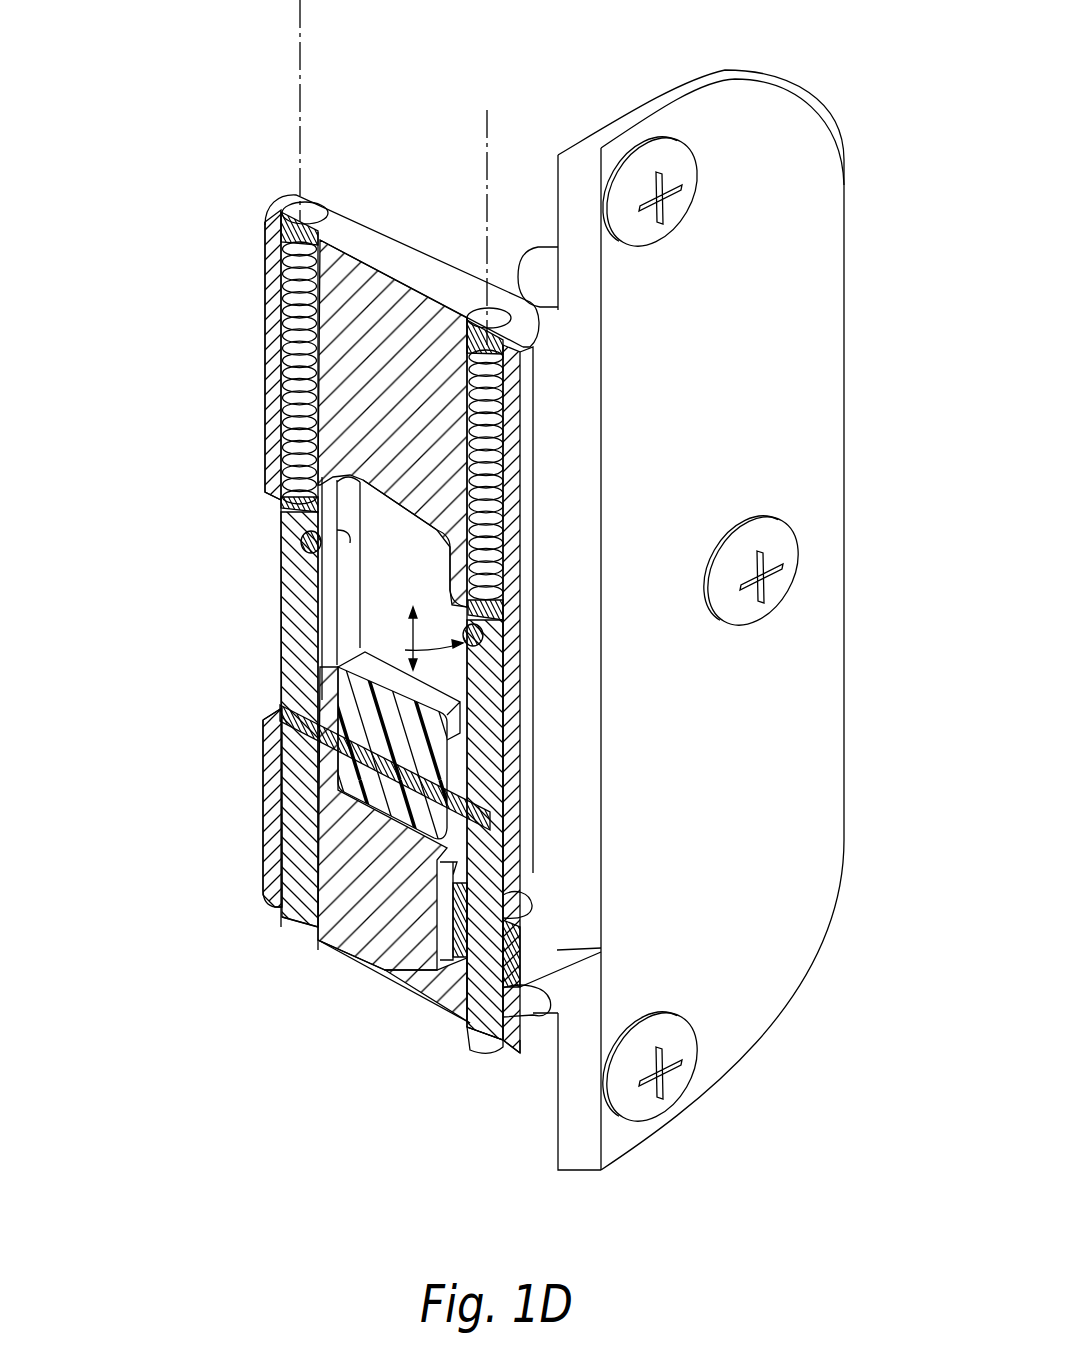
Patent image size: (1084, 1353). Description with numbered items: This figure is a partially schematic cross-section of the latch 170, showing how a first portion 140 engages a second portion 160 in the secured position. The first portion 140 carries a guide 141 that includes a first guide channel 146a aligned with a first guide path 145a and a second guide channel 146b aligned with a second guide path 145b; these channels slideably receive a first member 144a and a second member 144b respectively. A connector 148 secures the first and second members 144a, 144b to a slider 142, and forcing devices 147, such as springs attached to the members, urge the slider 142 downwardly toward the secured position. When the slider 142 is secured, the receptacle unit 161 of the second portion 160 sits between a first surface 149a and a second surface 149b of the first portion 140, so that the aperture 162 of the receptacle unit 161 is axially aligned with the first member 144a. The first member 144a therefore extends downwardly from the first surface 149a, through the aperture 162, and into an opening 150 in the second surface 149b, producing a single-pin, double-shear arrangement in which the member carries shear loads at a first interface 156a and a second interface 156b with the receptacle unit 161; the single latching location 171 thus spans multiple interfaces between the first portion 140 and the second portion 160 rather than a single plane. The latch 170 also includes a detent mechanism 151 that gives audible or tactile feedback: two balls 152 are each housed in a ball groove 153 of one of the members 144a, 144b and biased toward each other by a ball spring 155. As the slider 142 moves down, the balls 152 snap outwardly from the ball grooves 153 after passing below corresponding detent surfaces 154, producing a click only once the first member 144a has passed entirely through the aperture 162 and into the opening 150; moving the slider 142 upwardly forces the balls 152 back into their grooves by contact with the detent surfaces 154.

The first portion 140 is at (393, 252).
The guide 141 is at (243, 386).
The slider 142 is at (355, 700).
The first member 144a is at (503, 782).
The second member 144b is at (282, 667).
The first guide path 145a is at (488, 125).
The second guide path 145b is at (298, 50).
The first guide channel 146a is at (507, 530).
The second guide channel 146b is at (300, 415).
The forcing devices 147 is at (295, 268).
The connector 148 is at (345, 800).
The first surface 149a is at (520, 912).
The second surface 149b is at (533, 1010).
The opening 150 is at (503, 1042).
The detent mechanism 151 is at (463, 647).
The balls 152 is at (455, 640).
The ball groove 153 is at (300, 540).
The detent surfaces 154 is at (347, 540).
The ball spring 155 is at (500, 670).
The first interface 156a is at (440, 930).
The second interface 156b is at (470, 1027).
The second portion 160 is at (795, 917).
The receptacle unit 161 is at (557, 950).
The aperture 162 is at (317, 938).
The latch 170 is at (218, 791).
The single latching location 171 is at (440, 968).